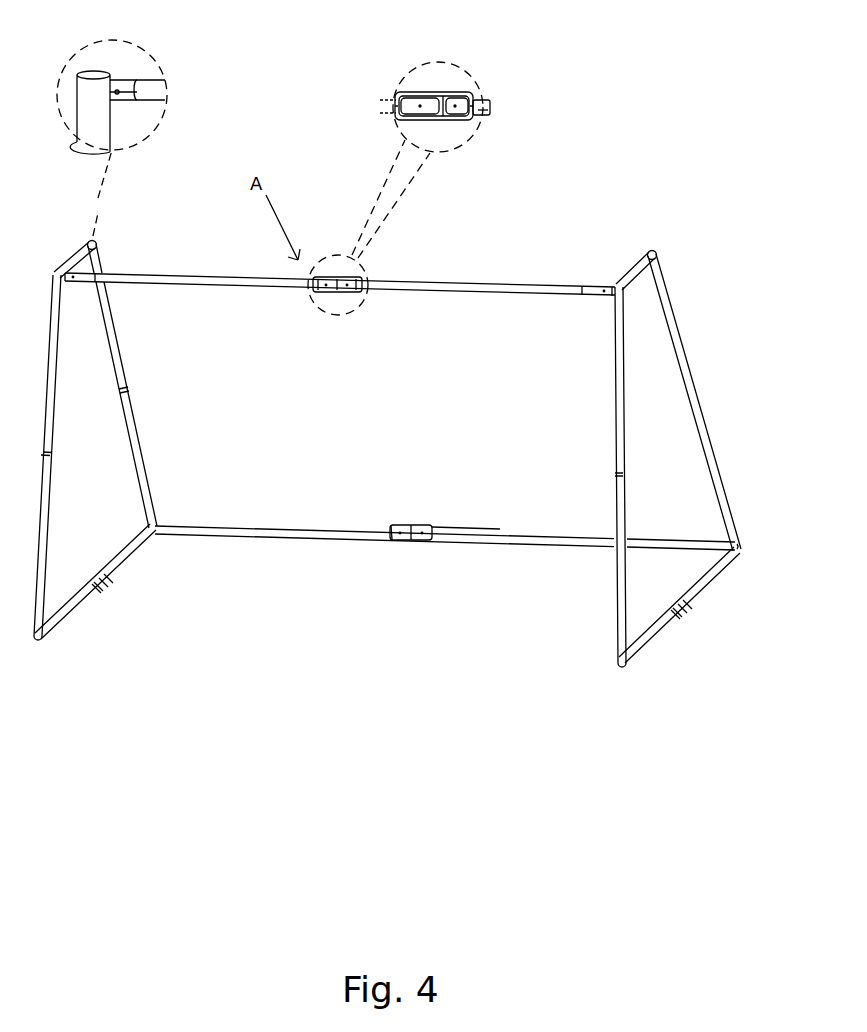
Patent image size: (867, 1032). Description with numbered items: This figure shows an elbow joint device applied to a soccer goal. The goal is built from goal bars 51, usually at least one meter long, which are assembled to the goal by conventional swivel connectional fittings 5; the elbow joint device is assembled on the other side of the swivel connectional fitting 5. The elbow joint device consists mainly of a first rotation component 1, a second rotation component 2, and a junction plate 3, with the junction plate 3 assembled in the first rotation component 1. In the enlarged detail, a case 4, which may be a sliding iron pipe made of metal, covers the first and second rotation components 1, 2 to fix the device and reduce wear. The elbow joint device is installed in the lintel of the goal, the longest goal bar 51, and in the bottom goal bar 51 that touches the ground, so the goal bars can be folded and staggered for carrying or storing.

The first rotation component 1 is at (421, 102).
The second rotation component 2 is at (470, 100).
The junction plate 3 is at (444, 97).
The case 4 is at (461, 95).
The swivel connectional fitting 5 is at (125, 86).
The goal bar 51 is at (480, 112).